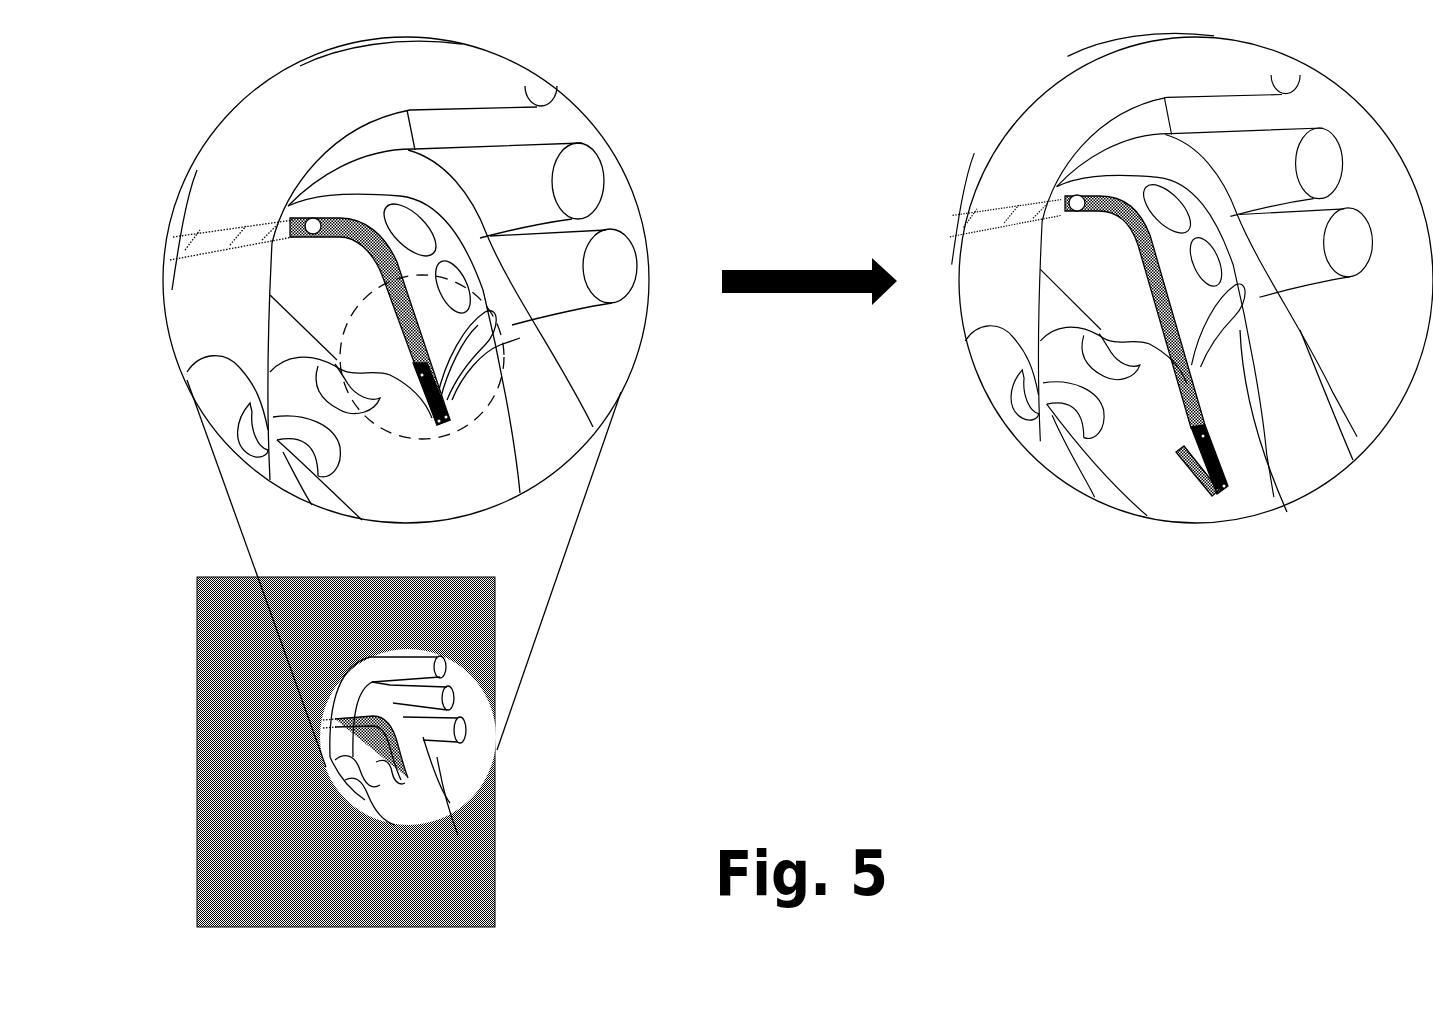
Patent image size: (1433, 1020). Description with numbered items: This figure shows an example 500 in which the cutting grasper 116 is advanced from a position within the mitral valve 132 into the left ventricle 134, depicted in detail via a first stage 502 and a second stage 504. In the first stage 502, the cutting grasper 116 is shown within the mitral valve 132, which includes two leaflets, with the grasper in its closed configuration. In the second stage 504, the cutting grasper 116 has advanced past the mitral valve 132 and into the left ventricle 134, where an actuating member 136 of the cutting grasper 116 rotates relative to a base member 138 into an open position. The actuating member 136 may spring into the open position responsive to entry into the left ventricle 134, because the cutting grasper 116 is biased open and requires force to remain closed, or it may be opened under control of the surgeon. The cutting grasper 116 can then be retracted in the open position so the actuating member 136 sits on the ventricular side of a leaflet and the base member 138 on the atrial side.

The example 500 is at (163, 74).
The first stage 502 is at (270, 66).
The second stage 504 is at (1030, 66).
The cutting grasper 116 is at (443, 363).
The mitral valve 132 is at (468, 410).
The left ventricle 134 is at (1263, 490).
The actuating member 136 is at (1193, 475).
The base member 138 is at (1215, 458).